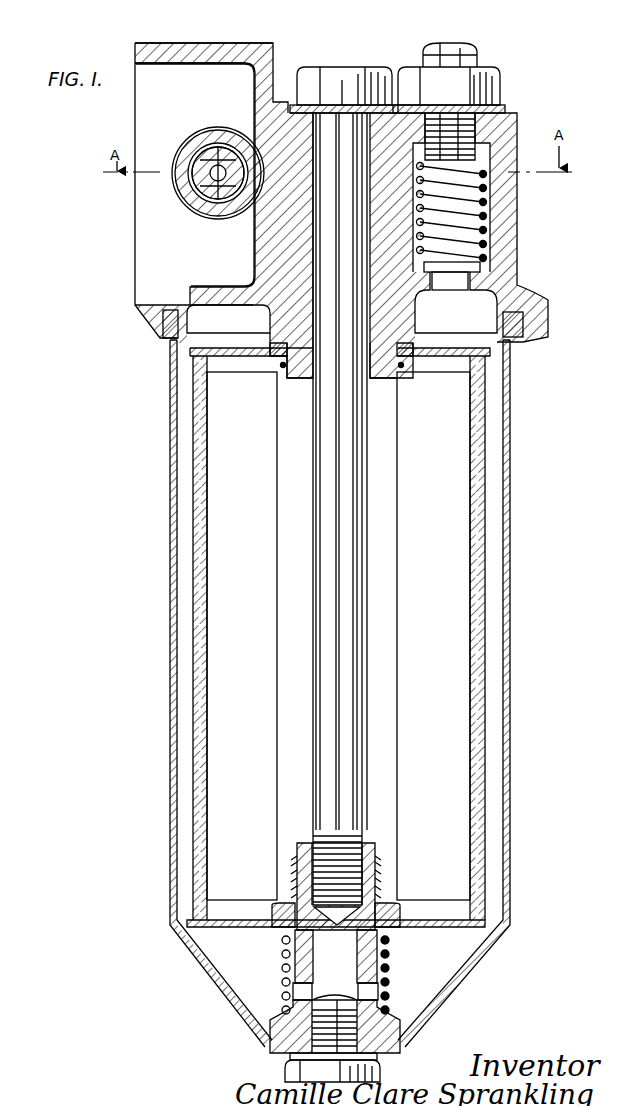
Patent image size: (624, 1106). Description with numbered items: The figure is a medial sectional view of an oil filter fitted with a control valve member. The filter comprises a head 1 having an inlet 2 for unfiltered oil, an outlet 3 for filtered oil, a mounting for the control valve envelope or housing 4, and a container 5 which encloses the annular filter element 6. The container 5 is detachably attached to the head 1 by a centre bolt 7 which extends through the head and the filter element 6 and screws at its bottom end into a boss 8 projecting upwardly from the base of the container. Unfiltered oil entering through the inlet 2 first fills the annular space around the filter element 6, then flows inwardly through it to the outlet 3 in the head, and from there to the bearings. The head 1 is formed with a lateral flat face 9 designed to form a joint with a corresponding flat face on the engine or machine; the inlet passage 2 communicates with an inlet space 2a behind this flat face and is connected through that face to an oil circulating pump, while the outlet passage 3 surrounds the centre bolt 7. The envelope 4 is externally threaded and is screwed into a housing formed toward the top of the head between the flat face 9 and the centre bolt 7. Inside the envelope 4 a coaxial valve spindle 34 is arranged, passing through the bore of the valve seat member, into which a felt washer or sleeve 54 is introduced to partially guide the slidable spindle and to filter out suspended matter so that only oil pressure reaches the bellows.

The head 1 is at (507, 236).
The inlet 2 is at (222, 302).
The inlet space 2a is at (150, 261).
The outlet 3 is at (310, 366).
The control valve envelope 4 is at (187, 183).
The container 5 is at (504, 543).
The annular filter element 6 is at (460, 527).
The centre bolt 7 is at (345, 522).
The boss 8 is at (368, 856).
The lateral flat face 9 is at (135, 50).
The valve spindle 34 is at (215, 192).
The felt washer or sleeve 54 is at (204, 155).